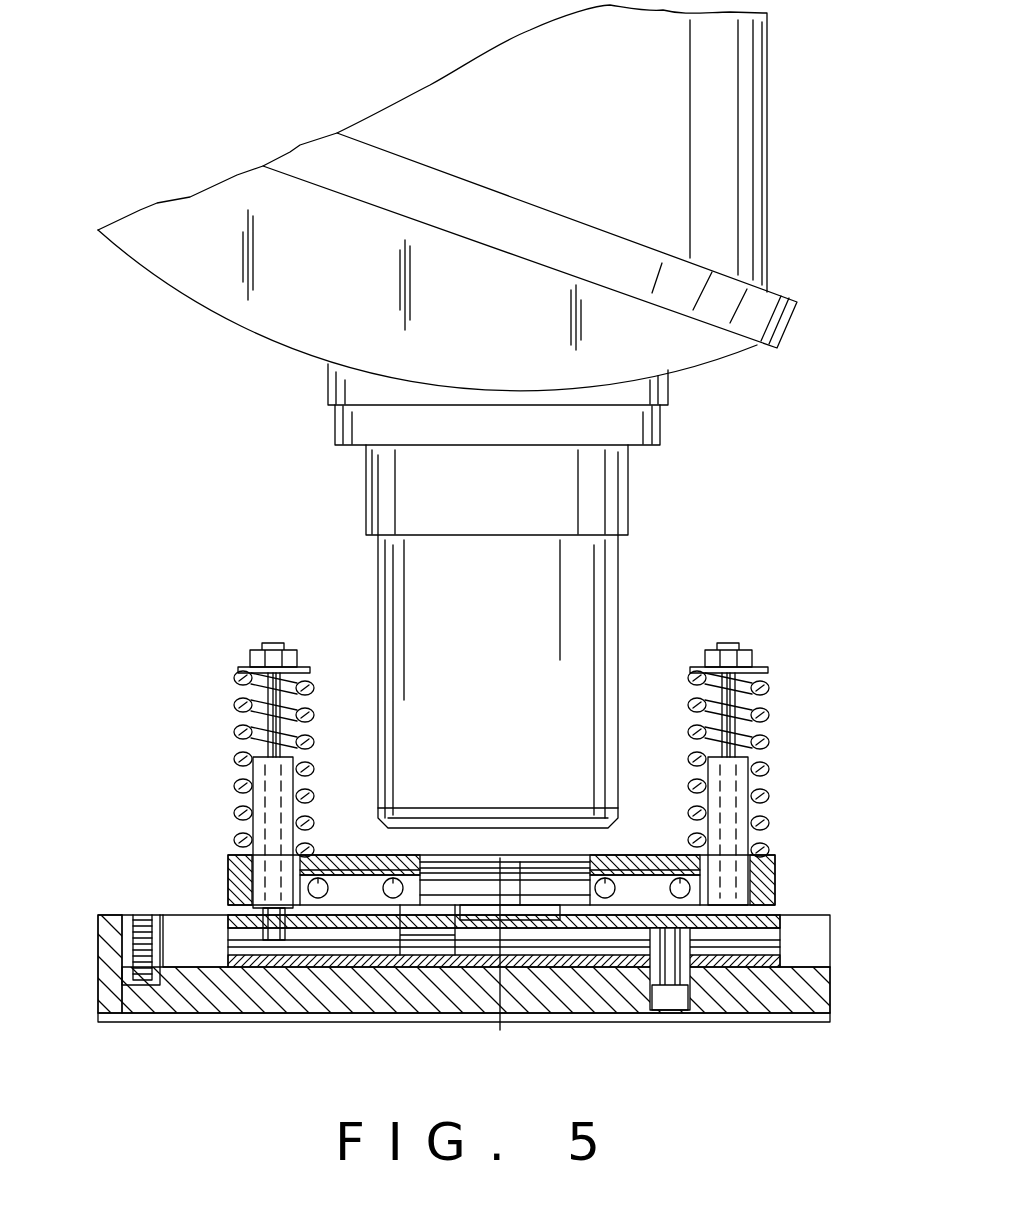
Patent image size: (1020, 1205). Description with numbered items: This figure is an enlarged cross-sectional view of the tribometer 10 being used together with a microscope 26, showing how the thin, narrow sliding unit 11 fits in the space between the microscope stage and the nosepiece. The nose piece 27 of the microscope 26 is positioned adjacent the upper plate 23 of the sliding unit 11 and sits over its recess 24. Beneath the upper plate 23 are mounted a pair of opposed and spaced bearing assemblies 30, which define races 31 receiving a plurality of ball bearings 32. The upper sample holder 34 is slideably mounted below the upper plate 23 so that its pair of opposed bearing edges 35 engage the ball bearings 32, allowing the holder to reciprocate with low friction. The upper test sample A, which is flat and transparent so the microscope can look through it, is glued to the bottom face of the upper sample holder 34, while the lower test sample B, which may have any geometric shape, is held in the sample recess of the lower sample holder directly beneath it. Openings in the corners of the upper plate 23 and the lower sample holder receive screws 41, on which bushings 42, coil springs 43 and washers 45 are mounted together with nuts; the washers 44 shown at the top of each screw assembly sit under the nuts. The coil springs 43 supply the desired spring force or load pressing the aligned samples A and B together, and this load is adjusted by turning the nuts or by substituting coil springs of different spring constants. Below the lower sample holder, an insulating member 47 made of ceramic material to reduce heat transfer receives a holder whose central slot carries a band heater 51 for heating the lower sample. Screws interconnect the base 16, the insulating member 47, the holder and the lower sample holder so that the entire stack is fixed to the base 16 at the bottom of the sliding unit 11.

The tribometer 10 is at (100, 1025).
The sliding unit 11 is at (790, 855).
The base 16 is at (148, 1022).
The upper plate 23 is at (668, 857).
The recess 24 is at (382, 830).
The microscope 26 is at (790, 126).
The nose piece 27 is at (620, 560).
The bearing assemblies 30 is at (322, 878).
The races 31 is at (240, 862).
The ball bearings 32 is at (350, 905).
The upper sample holder 34 is at (423, 872).
The bearing edges 35 is at (346, 905).
The screws 41 is at (285, 700).
The bushings 42 is at (252, 775).
The coil springs 43 is at (245, 715).
The washer 44 is at (247, 666).
The washers 45 is at (268, 658).
The insulating member 47 is at (300, 970).
The band heater 51 is at (745, 920).
The upper test sample A is at (518, 876).
The lower test sample B is at (525, 905).